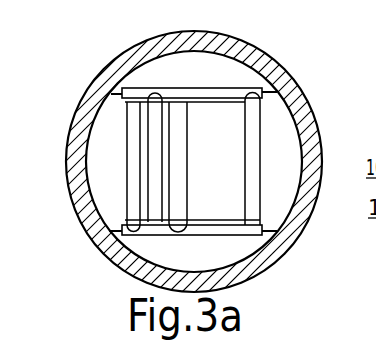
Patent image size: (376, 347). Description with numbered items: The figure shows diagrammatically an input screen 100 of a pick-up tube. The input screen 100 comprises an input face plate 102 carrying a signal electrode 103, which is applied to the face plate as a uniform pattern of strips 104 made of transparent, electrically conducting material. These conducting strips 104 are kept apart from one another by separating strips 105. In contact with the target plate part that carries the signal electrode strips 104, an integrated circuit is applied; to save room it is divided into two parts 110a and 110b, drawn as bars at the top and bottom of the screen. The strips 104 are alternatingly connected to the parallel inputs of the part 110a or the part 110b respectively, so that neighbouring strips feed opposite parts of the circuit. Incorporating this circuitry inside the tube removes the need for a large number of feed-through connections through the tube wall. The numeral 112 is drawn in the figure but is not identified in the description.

The input screen 100 is at (188, 173).
The input face plate 102 is at (298, 104).
The signal electrode 103 is at (116, 148).
The strips 104 is at (153, 125).
The strips 105 is at (168, 210).
The part of integrated circuit 110a is at (237, 92).
The part of integrated circuit 110b is at (245, 233).
The insulation / wall material 112 is at (309, 148).